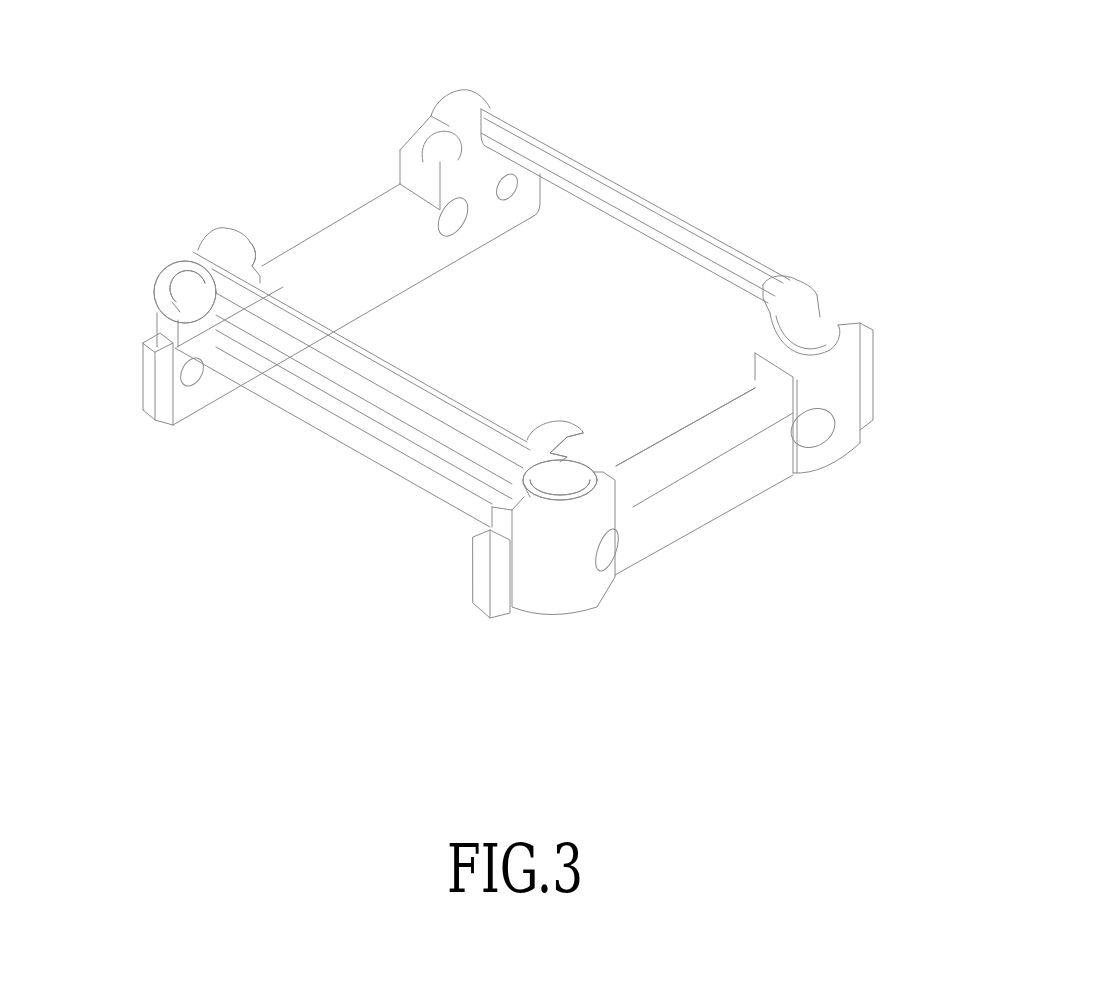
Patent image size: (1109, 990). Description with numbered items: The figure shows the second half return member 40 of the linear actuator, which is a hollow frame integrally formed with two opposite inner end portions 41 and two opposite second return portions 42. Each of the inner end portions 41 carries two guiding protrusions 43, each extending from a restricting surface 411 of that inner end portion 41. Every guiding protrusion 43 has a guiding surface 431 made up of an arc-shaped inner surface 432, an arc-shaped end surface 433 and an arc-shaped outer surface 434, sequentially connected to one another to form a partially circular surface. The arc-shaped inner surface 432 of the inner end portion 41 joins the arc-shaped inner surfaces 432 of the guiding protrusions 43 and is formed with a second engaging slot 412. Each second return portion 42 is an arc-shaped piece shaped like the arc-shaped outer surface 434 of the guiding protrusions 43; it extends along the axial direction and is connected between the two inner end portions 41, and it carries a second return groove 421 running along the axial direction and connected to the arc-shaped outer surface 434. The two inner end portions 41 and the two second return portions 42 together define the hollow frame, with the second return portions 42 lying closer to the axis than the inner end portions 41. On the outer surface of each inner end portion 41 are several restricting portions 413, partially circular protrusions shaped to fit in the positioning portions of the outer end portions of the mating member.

The second half return member 40 is at (689, 135).
The inner end portion 41 is at (377, 273).
The restricting surface 411 is at (167, 298).
The second engaging slot 412 is at (707, 437).
The restricting portion 413 is at (840, 442).
The second return portion 42 is at (672, 250).
The second return groove 421 is at (390, 410).
The guiding protrusion 43 is at (468, 124).
The guiding surface 431 is at (247, 130).
The arc-shaped inner surface 432 is at (247, 262).
The arc-shaped end surface 433 is at (203, 277).
The arc-shaped outer surface 434 is at (203, 293).